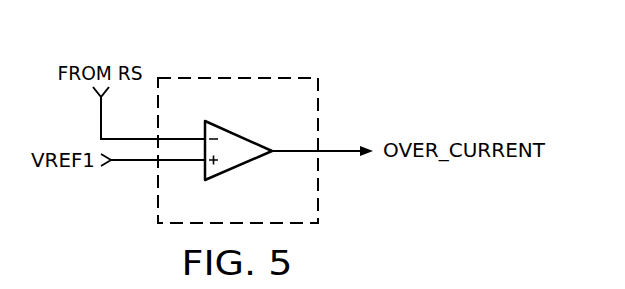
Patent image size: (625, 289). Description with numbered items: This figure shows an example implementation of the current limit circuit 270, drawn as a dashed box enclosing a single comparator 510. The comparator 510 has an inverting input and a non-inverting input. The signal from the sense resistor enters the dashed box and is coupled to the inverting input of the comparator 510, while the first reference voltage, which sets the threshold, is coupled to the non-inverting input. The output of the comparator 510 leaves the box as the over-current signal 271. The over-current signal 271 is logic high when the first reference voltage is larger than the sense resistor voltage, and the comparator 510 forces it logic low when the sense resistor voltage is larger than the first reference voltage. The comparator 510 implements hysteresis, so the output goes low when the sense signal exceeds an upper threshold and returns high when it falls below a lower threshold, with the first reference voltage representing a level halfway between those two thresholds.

The current limit circuit 270 is at (221, 72).
The comparator 510 is at (243, 134).
The OVER_CURRENT signal 271 is at (343, 147).